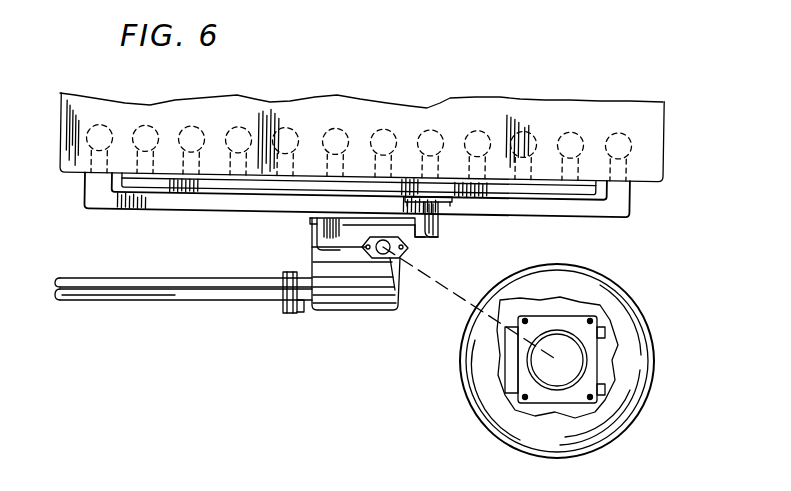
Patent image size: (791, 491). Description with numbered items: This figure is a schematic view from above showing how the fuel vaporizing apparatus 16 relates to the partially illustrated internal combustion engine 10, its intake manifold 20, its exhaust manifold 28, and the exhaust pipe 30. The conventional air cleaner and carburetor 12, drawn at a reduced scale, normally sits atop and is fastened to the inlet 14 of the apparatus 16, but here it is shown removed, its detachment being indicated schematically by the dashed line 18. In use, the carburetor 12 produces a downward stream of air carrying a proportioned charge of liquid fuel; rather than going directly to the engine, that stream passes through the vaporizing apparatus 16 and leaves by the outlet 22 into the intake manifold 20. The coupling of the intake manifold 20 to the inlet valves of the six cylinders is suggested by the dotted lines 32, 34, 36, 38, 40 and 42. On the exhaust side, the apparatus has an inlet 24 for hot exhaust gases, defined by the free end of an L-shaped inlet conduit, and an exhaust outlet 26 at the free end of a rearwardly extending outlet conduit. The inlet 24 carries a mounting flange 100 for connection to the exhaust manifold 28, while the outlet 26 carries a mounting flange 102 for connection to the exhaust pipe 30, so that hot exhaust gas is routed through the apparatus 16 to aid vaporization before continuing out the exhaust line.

The internal combustion engine 10 is at (390, 94).
The air cleaner and carburetor 12 is at (628, 288).
The inlet 14 is at (399, 262).
The fuel vaporizing apparatus 16 is at (347, 316).
The dashed line 18 is at (452, 290).
The intake manifold 20 is at (282, 198).
The outlet 22 is at (327, 217).
The inlet for hot exhaust gases 24 is at (428, 234).
The exhaust outlet 26 is at (300, 313).
The exhaust manifold 28 is at (499, 186).
The exhaust pipe 30 is at (176, 296).
The dotted line 32 is at (76, 163).
The dotted line 34 is at (243, 128).
The dotted line 36 is at (303, 143).
The dotted line 38 is at (450, 148).
The dotted line 40 is at (484, 133).
The dotted line 42 is at (631, 139).
The mounting flange 100 is at (440, 222).
The mounting flange 102 is at (283, 305).